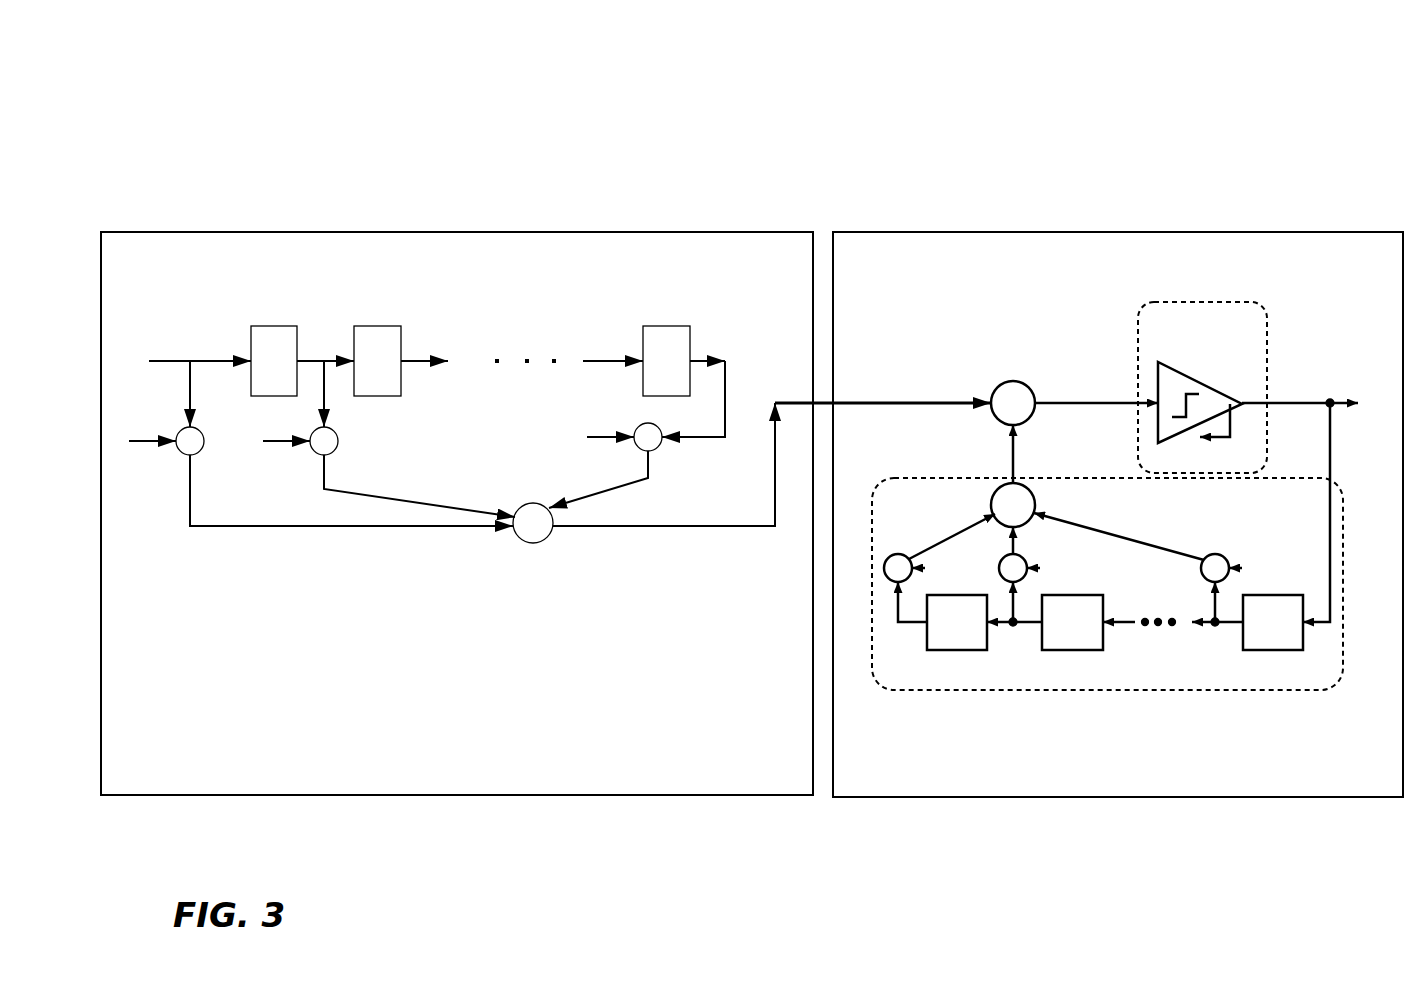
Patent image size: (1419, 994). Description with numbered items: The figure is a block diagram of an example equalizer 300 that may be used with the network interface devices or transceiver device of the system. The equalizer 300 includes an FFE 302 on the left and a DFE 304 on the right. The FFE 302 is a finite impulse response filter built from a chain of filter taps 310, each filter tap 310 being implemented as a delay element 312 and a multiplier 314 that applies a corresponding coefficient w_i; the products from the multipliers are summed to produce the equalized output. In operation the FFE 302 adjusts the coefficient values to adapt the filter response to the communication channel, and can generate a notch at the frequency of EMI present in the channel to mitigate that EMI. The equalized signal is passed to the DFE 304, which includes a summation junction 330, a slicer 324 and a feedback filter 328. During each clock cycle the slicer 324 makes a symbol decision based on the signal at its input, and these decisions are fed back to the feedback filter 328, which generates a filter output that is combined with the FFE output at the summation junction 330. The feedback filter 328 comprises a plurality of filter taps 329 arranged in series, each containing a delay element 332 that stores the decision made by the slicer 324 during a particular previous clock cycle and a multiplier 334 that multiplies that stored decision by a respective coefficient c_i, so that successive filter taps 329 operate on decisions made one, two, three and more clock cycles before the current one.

The equalizer 300 is at (1130, 58).
The FFE 302 is at (457, 513).
The DFE 304 is at (1118, 514).
The filter tap 310 is at (386, 294).
The delay element 312 is at (237, 330).
The multiplier 314 is at (174, 417).
The slicer 324 is at (1202, 387).
The feedback filter 328 is at (1107, 573).
The filter tap 329 is at (1017, 655).
The summation junction 330 is at (1017, 380).
The delay element 332 is at (1292, 585).
The multiplier 334 is at (1232, 545).